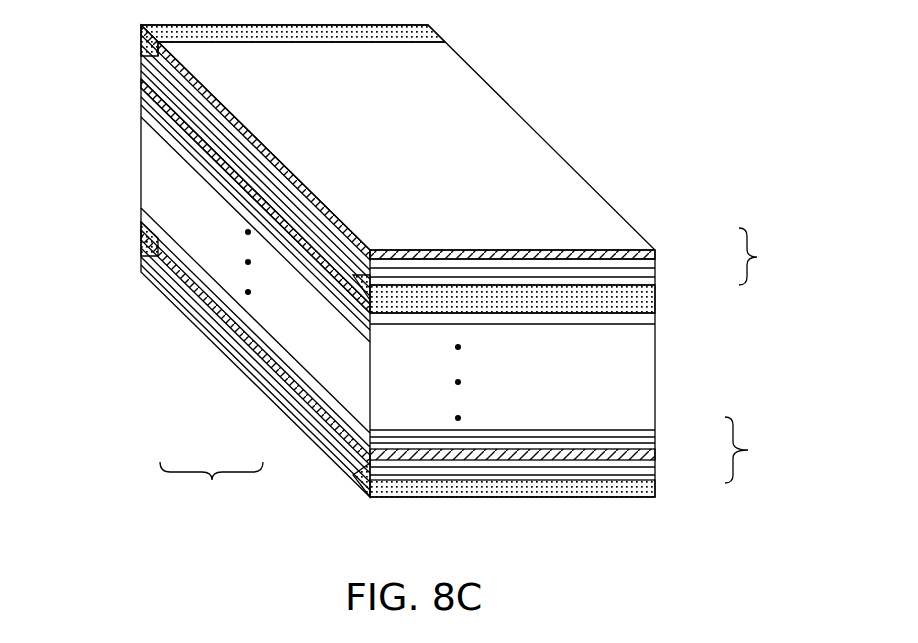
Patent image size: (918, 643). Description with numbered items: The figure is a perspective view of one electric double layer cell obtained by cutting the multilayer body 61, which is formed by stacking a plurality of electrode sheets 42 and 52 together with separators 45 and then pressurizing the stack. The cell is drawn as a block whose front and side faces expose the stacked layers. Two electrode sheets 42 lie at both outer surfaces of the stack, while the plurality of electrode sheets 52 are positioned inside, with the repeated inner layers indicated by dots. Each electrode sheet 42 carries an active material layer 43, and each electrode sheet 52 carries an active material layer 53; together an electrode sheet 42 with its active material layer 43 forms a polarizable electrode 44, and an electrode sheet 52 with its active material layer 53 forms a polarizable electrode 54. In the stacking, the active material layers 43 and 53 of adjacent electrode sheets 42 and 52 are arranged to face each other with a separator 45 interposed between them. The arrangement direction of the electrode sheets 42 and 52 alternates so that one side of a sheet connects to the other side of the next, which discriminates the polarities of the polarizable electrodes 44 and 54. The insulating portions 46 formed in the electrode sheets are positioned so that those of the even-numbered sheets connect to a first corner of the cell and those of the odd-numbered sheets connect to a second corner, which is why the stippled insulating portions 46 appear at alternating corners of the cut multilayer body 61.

The electrode sheet 42 is at (655, 253).
The active material layer 43 is at (655, 266).
The polarizable electrode 44 is at (478, 371).
The separator 45 is at (655, 475).
The insulating portion 46 is at (150, 40).
The electrode sheet 52 is at (655, 455).
The active material layer 53 is at (655, 447).
The polarizable electrode 54 is at (754, 450).
The multilayer body 61 is at (542, 138).